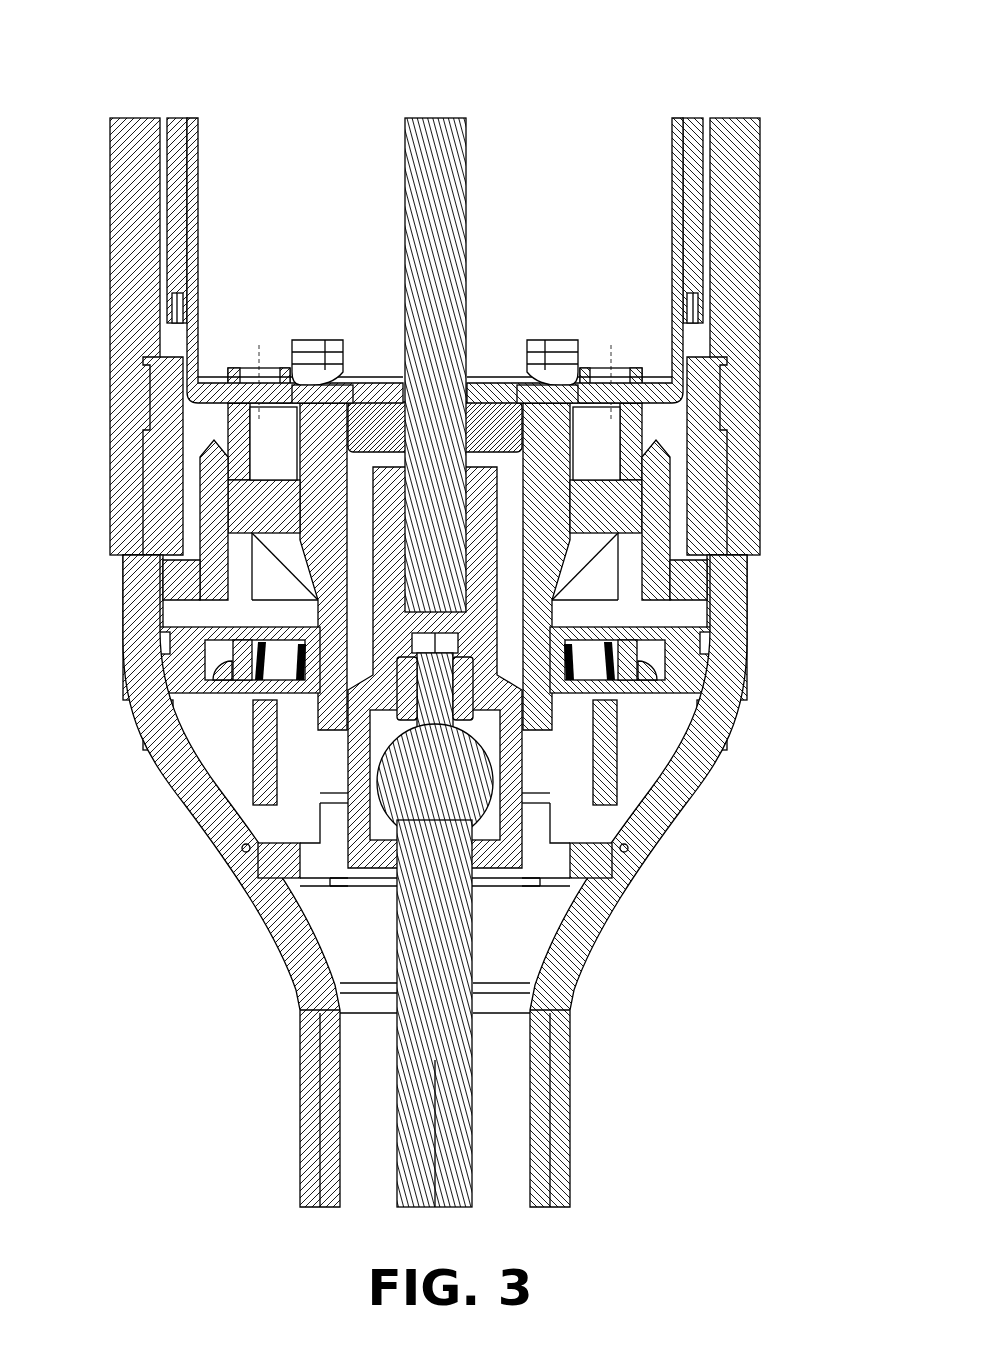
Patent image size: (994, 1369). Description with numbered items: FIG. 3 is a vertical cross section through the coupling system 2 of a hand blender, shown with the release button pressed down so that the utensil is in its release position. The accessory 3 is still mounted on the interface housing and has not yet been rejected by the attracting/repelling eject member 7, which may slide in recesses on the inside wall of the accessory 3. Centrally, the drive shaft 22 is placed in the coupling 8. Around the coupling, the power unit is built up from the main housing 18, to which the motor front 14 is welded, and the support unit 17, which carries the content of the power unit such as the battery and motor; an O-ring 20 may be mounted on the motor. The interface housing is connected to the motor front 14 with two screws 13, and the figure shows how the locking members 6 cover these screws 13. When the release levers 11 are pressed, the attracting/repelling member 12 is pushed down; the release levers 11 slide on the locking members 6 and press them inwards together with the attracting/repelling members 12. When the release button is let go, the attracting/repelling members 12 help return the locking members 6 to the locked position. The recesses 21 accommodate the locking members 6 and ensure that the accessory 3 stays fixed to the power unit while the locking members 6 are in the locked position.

The coupling system 2 is at (287, 105).
The accessory 3 is at (150, 728).
The locking members 6 is at (205, 637).
The attracting/repelling eject member 7 is at (285, 850).
The coupling 8 is at (380, 818).
The release levers 11 is at (203, 656).
The attracting/repelling member 12 is at (300, 655).
The screws 13 is at (205, 523).
The motor front 14 is at (700, 368).
The support unit 17 is at (678, 223).
The main housing 18 is at (748, 125).
The O-ring 20 is at (330, 405).
The recesses 21 is at (148, 642).
The drive shaft 22 is at (420, 1185).